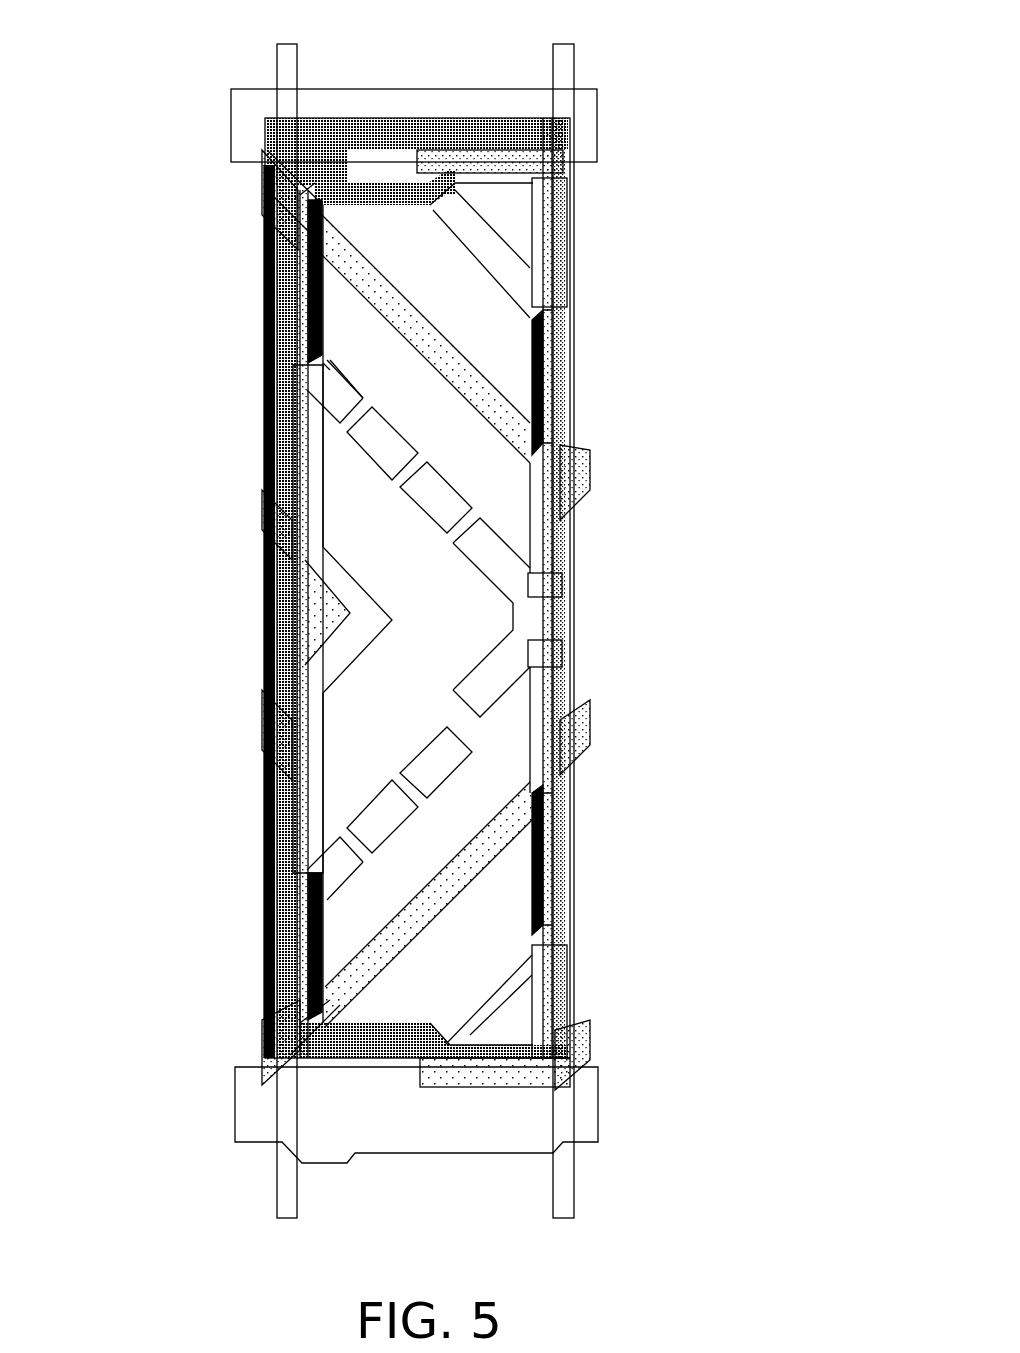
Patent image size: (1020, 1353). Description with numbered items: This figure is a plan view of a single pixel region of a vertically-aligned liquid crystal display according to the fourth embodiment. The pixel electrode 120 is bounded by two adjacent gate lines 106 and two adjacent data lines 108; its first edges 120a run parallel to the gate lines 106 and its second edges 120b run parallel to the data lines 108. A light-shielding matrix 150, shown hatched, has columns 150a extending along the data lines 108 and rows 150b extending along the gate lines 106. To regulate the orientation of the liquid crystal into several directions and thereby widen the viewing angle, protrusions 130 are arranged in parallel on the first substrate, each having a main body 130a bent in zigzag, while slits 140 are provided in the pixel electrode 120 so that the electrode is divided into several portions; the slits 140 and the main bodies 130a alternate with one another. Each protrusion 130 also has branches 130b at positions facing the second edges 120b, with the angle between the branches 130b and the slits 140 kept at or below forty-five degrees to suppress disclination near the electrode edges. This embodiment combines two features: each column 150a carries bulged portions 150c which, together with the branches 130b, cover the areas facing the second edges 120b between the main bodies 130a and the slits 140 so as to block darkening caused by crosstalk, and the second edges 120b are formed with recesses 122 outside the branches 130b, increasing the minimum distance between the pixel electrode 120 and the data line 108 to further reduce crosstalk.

The gate line 106 is at (582, 128).
The data line 108 is at (287, 62).
The pixel electrode 120 is at (394, 222).
The first edge 120a is at (372, 175).
The second edge 120b is at (530, 367).
The recess 122 is at (300, 252).
The protrusion 130 is at (548, 398).
The main body 130a is at (388, 307).
The branch 130b is at (318, 493).
The slit 140 is at (548, 236).
The light-shielding matrix 150 is at (340, 118).
The column 150a is at (290, 628).
The row 150b is at (483, 127).
The bulged portion 150c is at (548, 360).